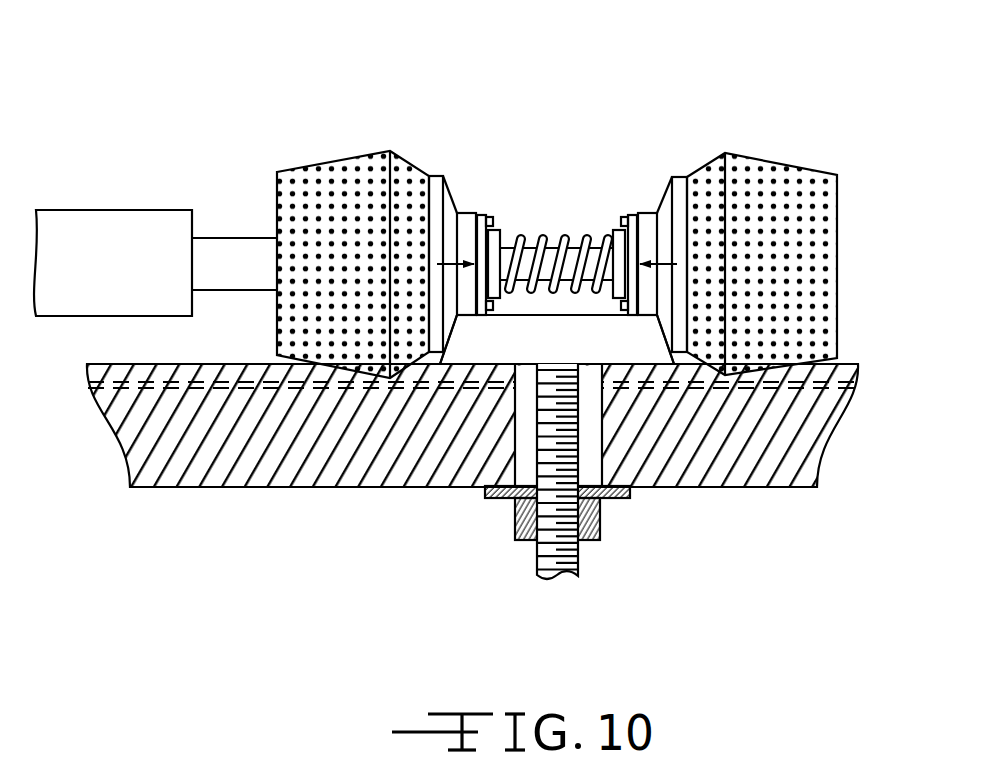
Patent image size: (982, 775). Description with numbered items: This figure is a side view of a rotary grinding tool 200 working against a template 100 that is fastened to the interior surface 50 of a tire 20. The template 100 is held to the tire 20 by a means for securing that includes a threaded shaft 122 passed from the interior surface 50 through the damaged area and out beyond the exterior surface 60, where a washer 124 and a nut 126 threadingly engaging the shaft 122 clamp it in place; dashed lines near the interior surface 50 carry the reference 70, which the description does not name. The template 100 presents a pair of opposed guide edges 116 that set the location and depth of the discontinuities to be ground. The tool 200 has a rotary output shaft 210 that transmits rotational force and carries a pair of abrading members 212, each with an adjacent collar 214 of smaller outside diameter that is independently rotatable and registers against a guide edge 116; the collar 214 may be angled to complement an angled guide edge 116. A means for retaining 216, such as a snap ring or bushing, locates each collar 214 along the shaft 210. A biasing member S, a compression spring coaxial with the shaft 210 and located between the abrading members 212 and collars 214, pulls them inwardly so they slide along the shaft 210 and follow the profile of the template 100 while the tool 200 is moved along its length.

The tire 20 is at (486, 417).
The interior surface 50 is at (847, 360).
The exterior surface 60 is at (755, 495).
The internal layer / thin sheet 70 is at (857, 387).
The template 100 is at (557, 326).
The guide edges 116 is at (461, 322).
The shaft 122 is at (578, 568).
The washer 124 is at (632, 493).
The nut 126 is at (601, 533).
The rotary grinding tool 200 is at (435, 196).
The rotary output shaft 210 is at (240, 237).
The abrading members 212 is at (349, 158).
The collar 214 is at (458, 200).
The means for retaining the collar 216 is at (480, 206).
The biasing member S is at (589, 232).